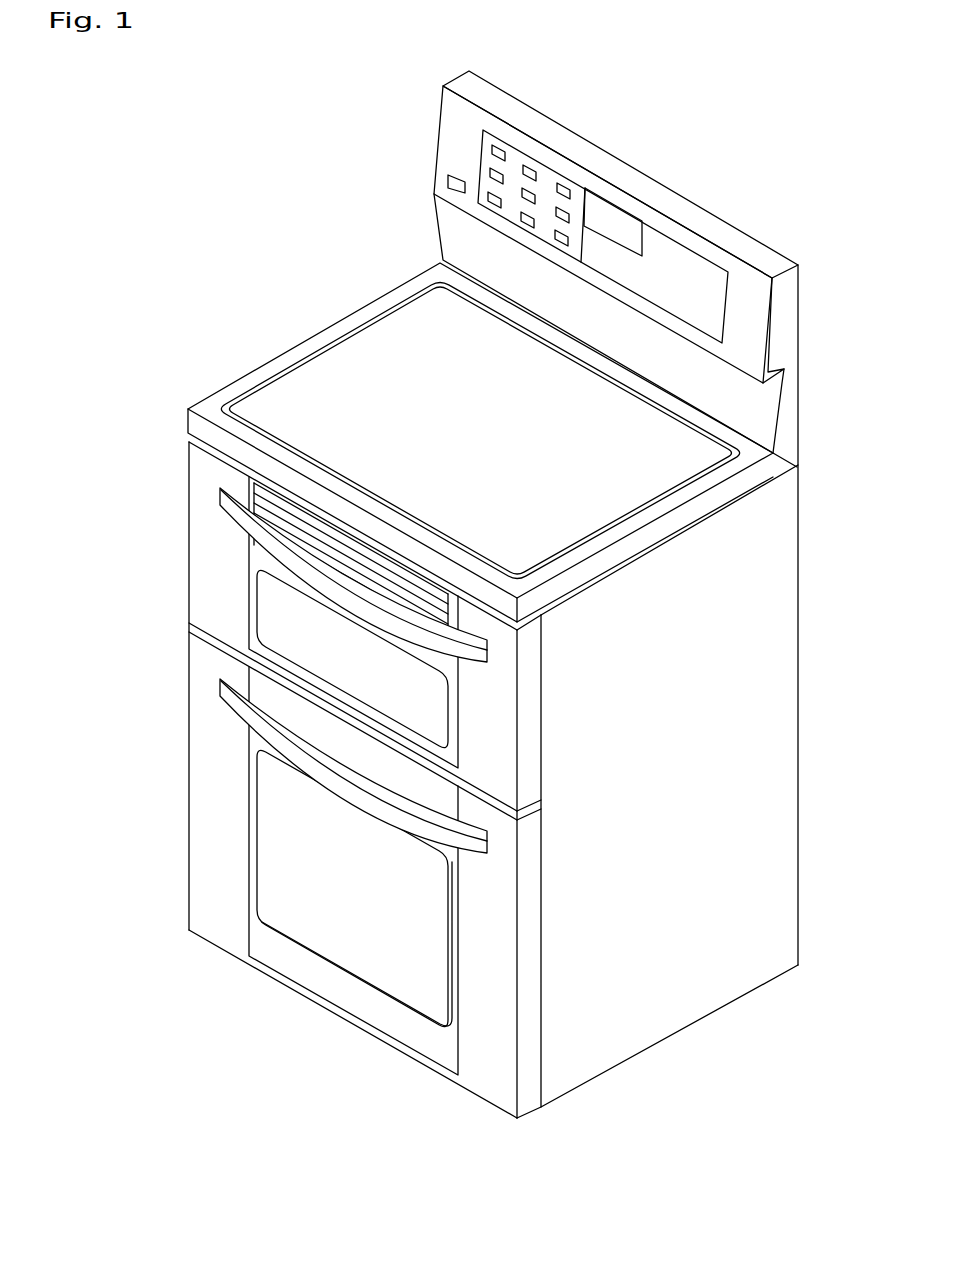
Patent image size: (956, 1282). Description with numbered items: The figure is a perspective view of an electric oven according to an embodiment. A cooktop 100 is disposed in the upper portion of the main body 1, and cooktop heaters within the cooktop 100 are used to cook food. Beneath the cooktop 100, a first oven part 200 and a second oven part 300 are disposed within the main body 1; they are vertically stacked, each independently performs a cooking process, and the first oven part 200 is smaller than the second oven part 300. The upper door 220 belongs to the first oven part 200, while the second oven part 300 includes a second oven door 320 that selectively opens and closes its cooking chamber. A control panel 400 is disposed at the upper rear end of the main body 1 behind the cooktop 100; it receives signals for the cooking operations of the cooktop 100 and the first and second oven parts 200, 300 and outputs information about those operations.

The main body 1 is at (251, 210).
The cooktop 100 is at (240, 348).
The first oven part 200 is at (160, 467).
The upper oven door 220 is at (189, 574).
The second oven part 300 is at (160, 762).
The second oven door 320 is at (189, 881).
The control panel 400 is at (650, 187).